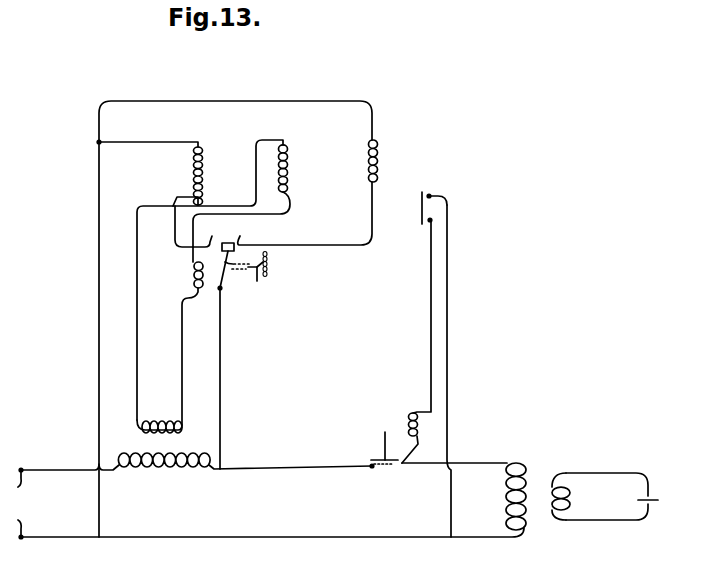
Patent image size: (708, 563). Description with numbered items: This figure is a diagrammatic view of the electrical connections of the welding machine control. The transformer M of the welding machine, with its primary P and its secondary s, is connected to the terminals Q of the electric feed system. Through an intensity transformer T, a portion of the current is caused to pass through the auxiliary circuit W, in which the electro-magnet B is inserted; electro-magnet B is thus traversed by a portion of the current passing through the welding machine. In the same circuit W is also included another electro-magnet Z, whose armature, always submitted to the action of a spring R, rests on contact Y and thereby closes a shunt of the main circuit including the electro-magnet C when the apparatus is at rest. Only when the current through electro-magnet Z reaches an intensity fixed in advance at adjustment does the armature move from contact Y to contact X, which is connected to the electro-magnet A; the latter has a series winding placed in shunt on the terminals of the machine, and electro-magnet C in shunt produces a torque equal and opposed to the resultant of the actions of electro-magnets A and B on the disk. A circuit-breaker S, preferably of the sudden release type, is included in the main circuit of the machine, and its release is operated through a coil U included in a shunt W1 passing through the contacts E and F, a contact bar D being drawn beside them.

The electro-magnet A is at (198, 147).
The electro-magnet B is at (283, 145).
The electro-magnet C is at (377, 146).
The contact bar D is at (421, 207).
The contact E is at (429, 196).
The contact F is at (430, 220).
The contact X is at (204, 234).
The contact Y is at (234, 256).
The electro-magnet Z is at (194, 274).
The spring R is at (246, 278).
The auxiliary circuit W is at (137, 334).
The shunt W1 is at (447, 297).
The coil U is at (408, 419).
The circuit-breaker S is at (396, 466).
The intensity transformer T is at (164, 474).
The terminals Q is at (16, 503).
The primary P is at (506, 497).
The secondary s is at (605, 496).
The transformer M is at (282, 543).